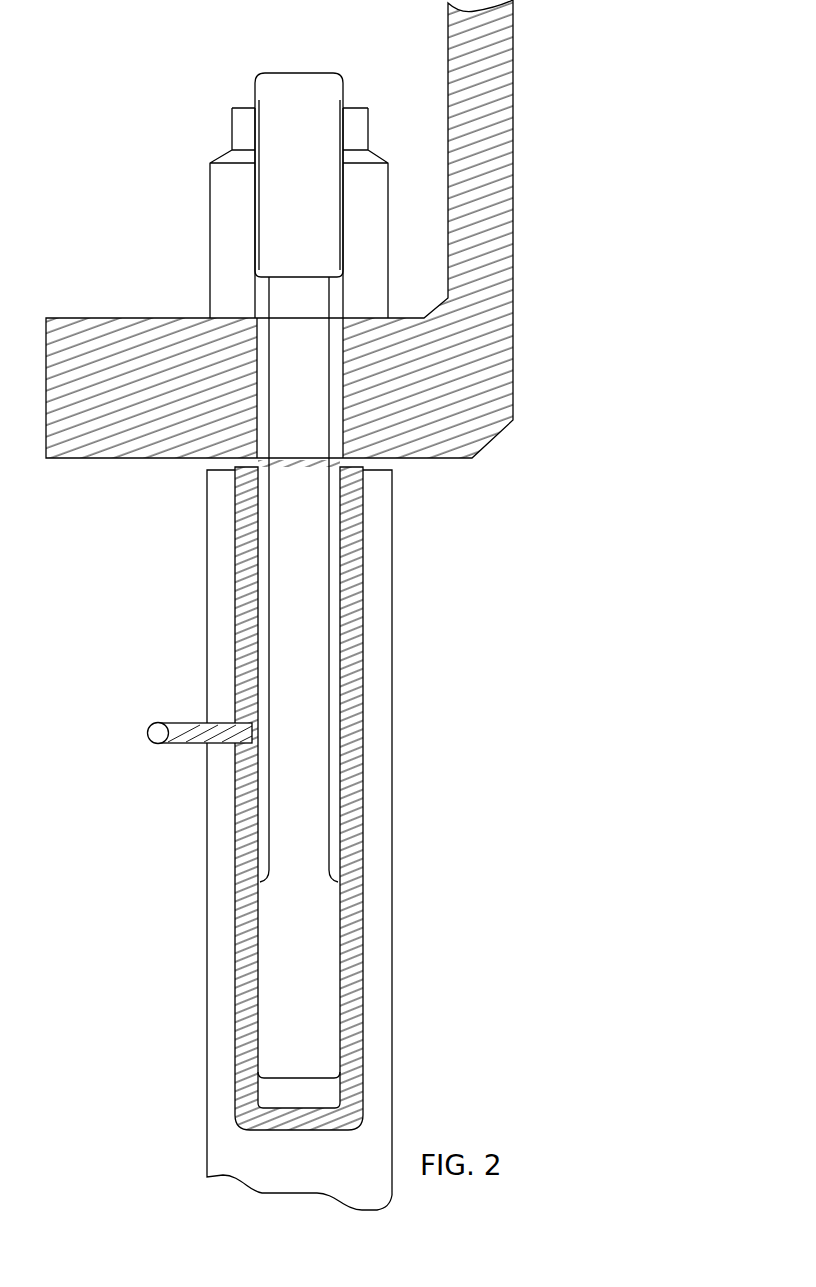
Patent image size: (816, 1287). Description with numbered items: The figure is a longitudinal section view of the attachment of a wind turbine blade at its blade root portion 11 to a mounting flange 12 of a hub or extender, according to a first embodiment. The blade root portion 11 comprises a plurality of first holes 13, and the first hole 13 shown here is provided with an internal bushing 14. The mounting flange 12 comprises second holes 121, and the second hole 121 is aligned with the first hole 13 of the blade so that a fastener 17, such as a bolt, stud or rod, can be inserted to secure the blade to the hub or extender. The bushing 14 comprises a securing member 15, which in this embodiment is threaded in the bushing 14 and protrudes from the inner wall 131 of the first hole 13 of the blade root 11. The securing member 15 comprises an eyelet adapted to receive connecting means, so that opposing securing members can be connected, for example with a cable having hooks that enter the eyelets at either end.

The blade root portion 11 is at (263, 1157).
The mounting flange 12 is at (492, 417).
The second hole 121 is at (263, 327).
The first hole 13 is at (263, 482).
The inner wall 131 is at (207, 844).
The bushing 14 is at (357, 517).
The securing member 15 is at (190, 747).
The fastener 17 is at (303, 662).